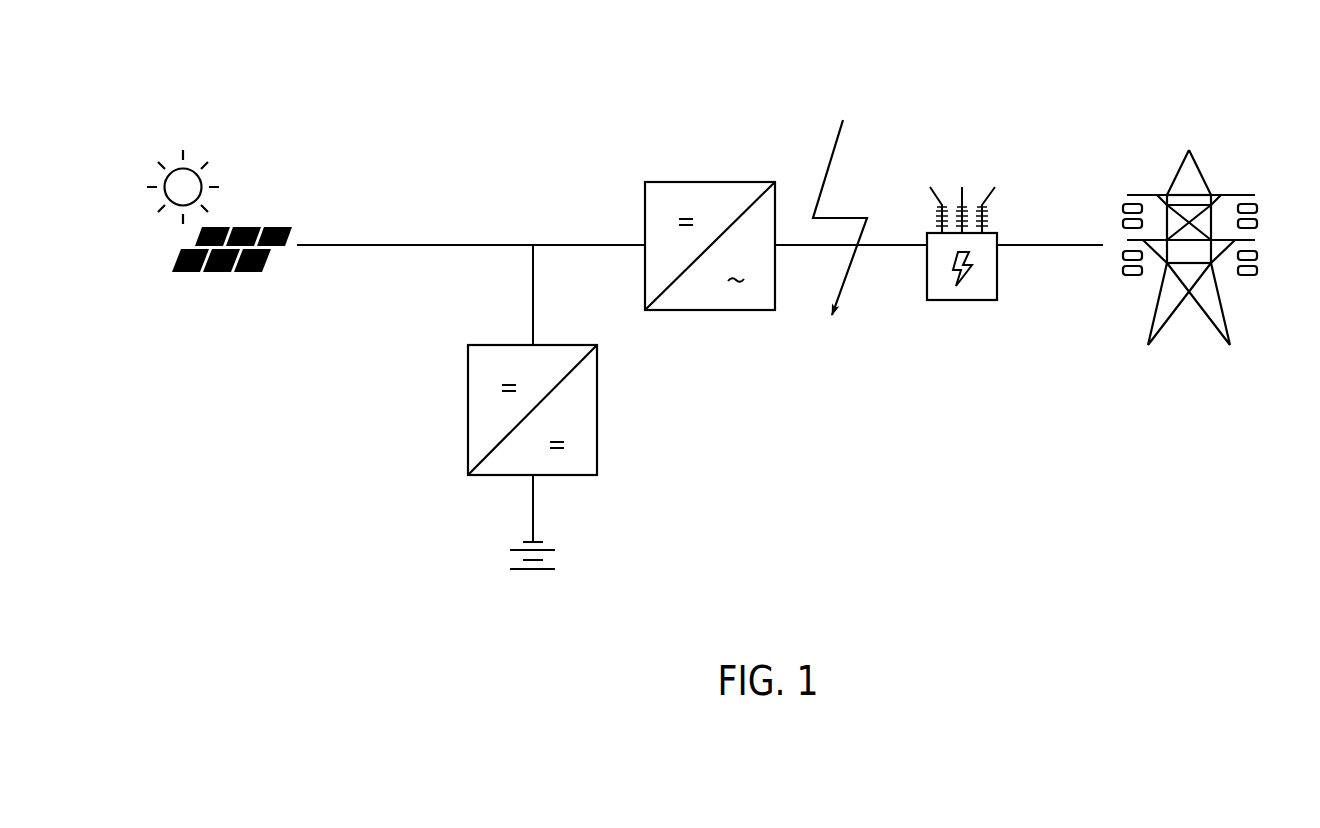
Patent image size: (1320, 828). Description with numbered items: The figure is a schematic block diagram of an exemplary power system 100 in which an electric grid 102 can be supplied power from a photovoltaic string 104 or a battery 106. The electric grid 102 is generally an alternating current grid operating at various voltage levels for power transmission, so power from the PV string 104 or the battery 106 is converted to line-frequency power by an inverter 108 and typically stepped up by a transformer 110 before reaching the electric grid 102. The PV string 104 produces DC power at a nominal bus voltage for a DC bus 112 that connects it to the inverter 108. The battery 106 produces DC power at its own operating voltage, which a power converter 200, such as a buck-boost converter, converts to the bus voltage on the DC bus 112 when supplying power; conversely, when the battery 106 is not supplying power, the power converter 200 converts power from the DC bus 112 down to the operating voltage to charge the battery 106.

The power system 100 is at (368, 98).
The electric grid 102 is at (1160, 178).
The photovoltaic (PV) string 104 is at (250, 225).
The battery 106 is at (534, 575).
The inverter 108 is at (635, 213).
The transformer 110 is at (948, 180).
The DC bus 112 is at (450, 233).
The power converter 200 is at (612, 435).